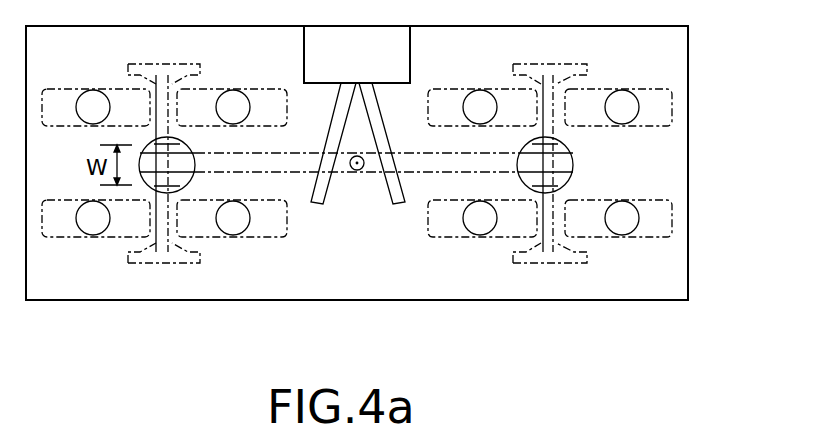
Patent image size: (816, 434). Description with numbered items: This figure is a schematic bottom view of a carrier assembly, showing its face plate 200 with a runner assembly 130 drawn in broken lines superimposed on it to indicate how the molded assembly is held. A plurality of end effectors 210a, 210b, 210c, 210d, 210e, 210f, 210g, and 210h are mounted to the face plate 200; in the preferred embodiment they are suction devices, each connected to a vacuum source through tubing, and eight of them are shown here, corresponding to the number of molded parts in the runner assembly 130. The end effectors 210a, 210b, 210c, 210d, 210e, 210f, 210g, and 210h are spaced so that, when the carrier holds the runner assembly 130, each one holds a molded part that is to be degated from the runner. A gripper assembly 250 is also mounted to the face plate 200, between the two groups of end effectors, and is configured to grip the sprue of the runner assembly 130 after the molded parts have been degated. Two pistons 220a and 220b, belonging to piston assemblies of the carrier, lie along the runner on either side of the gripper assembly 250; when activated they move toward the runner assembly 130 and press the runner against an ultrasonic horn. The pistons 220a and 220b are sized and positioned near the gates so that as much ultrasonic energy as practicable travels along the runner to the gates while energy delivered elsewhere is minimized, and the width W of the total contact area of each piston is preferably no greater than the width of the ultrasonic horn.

The face plate 200 is at (688, 268).
The runner assembly 130 is at (662, 105).
The end effector 210a is at (92, 101).
The end effector 210b is at (234, 101).
The end effector 210c is at (93, 222).
The end effector 210d is at (233, 222).
The end effector 210e is at (480, 101).
The end effector 210f is at (622, 101).
The end effector 210g is at (478, 222).
The end effector 210h is at (616, 220).
The piston 220a is at (190, 150).
The piston 220b is at (570, 150).
The gripper assembly 250 is at (323, 200).